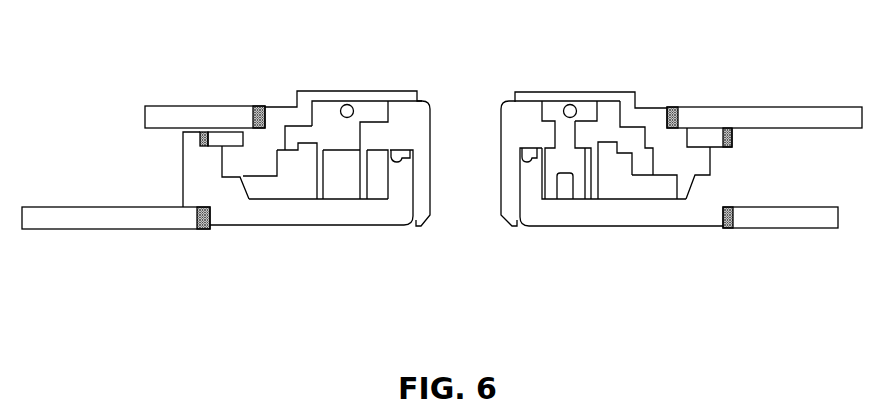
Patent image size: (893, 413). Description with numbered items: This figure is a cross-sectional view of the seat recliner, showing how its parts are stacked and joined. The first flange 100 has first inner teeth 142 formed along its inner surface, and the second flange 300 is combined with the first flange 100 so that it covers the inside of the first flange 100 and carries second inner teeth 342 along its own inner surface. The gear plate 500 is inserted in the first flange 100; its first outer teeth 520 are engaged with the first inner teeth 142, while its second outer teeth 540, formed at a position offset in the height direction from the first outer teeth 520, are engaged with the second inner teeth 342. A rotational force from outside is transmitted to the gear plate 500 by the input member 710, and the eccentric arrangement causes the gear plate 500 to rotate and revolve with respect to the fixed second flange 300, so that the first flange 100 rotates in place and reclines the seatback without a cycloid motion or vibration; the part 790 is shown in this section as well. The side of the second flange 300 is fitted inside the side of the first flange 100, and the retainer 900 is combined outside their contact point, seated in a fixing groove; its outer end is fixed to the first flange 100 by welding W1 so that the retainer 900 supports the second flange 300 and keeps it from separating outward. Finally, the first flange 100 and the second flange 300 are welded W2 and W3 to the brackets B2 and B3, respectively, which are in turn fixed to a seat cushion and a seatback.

The first flange 100 is at (620, 213).
The first inner teeth 142 is at (233, 193).
The second flange 300 is at (553, 95).
The second inner teeth 342 is at (267, 162).
The gear plate 500 is at (608, 157).
The first outer teeth 520 is at (259, 188).
The second outer teeth 540 is at (298, 168).
The input member 710 is at (423, 107).
The pin 790 is at (347, 104).
The retainer 900 is at (222, 137).
The welding W1 is at (200, 138).
The welding W2 is at (672, 108).
The welding W3 is at (727, 230).
The bracket B2 is at (810, 115).
The bracket B3 is at (789, 232).